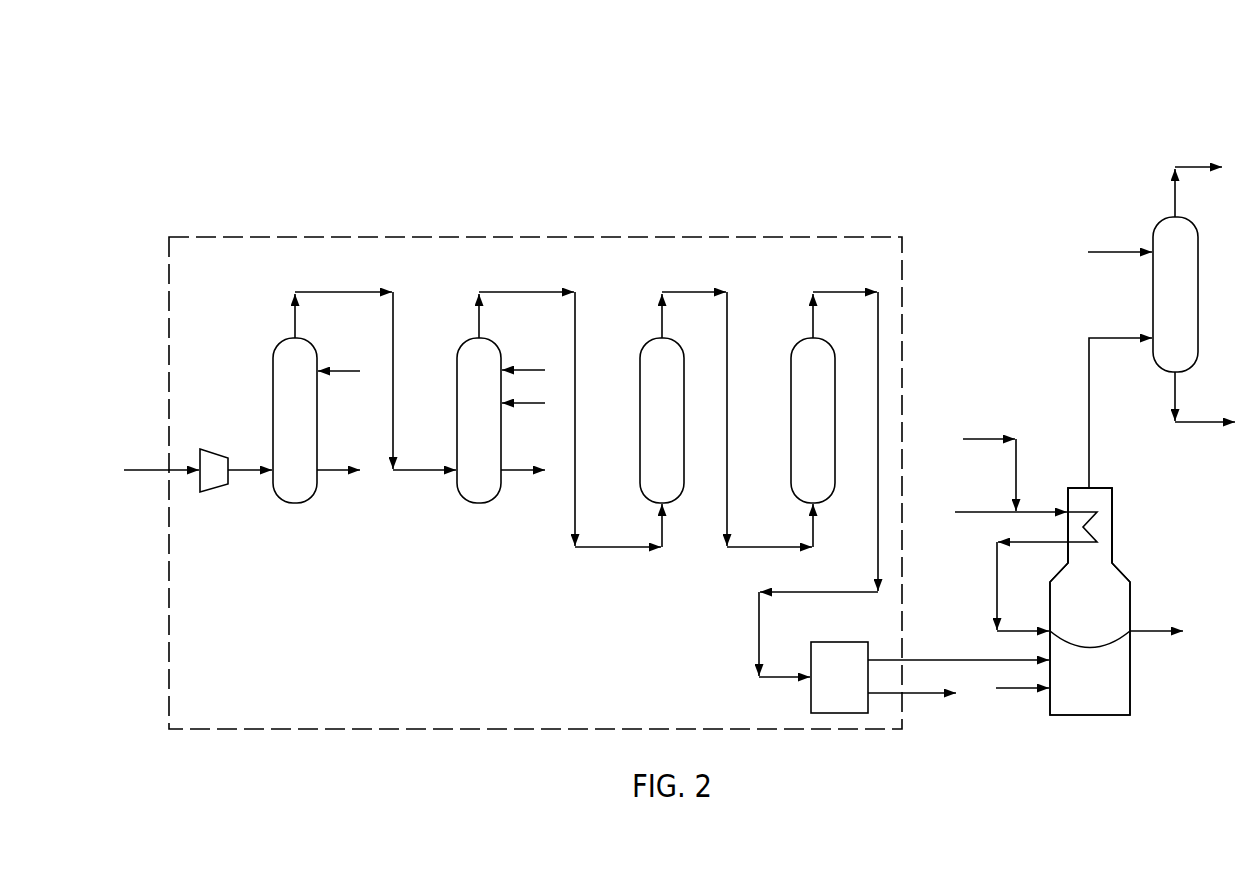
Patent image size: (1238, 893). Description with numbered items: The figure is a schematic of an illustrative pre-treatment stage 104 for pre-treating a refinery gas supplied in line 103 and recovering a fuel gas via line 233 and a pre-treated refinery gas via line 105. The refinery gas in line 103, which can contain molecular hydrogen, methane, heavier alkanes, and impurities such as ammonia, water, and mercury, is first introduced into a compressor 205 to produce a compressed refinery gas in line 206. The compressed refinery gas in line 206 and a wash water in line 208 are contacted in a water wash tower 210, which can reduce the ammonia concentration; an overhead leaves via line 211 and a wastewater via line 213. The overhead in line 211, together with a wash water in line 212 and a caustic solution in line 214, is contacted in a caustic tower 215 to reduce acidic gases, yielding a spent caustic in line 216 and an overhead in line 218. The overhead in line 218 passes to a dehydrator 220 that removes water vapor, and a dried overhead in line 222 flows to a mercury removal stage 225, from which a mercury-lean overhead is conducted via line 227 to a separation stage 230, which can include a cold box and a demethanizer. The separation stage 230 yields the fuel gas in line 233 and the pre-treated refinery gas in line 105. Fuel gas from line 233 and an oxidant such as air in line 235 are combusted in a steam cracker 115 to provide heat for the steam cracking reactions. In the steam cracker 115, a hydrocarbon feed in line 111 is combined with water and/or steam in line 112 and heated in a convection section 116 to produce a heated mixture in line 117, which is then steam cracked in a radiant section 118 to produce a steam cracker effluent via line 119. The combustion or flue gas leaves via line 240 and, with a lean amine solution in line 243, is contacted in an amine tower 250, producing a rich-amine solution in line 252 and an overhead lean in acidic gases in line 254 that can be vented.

The refinery gas line 103 is at (145, 467).
The pre-treatment stage 104 is at (573, 237).
The pre-treated refinery gas line 105 is at (924, 699).
The hydrocarbon feed line 111 is at (973, 508).
The water and/or steam line 112 is at (980, 436).
The steam cracker 115 is at (1103, 488).
The convection section 116 is at (1124, 503).
The heated mixture line 117 is at (996, 586).
The radiant section 118 is at (1085, 742).
The steam cracker effluent line 119 is at (1154, 627).
The compressor 205 is at (213, 448).
The compressed refinery gas line 206 is at (246, 476).
The wash water line 208 is at (347, 366).
The water wash tower 210 is at (273, 383).
The overhead line 211 is at (345, 289).
The wash water line 212 is at (531, 366).
The wastewater line 213 is at (336, 476).
The caustic solution line 214 is at (531, 408).
The caustic tower 215 is at (457, 383).
The spent caustic line 216 is at (517, 476).
The overhead line 218 is at (529, 289).
The dehydrator 220 is at (640, 383).
The dried overhead line 222 is at (694, 289).
The mercury removal stage 225 is at (791, 383).
The mercury-lean overhead line 227 is at (877, 535).
The separation stage 230 is at (826, 688).
The fuel gas line 233 is at (936, 655).
The oxidant line 235 is at (1013, 694).
The flue gas line 240 is at (1089, 392).
The lean amine solution line 243 is at (1106, 248).
The amine tower 250 is at (1153, 296).
The rich-amine solution line 252 is at (1211, 418).
The overhead line 254 is at (1193, 163).